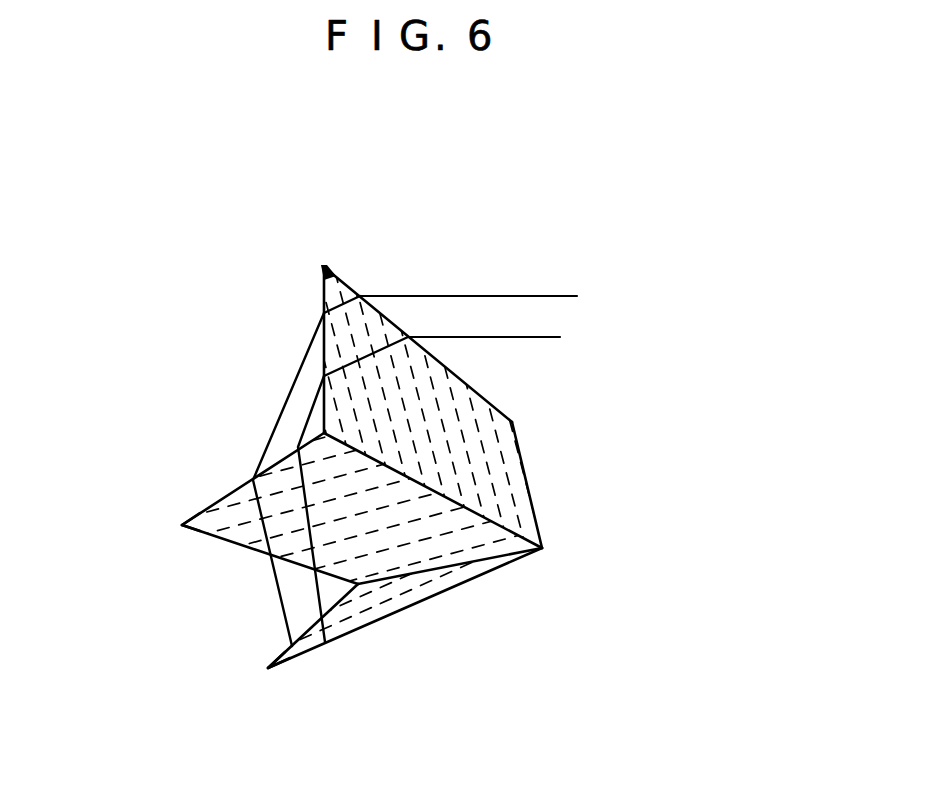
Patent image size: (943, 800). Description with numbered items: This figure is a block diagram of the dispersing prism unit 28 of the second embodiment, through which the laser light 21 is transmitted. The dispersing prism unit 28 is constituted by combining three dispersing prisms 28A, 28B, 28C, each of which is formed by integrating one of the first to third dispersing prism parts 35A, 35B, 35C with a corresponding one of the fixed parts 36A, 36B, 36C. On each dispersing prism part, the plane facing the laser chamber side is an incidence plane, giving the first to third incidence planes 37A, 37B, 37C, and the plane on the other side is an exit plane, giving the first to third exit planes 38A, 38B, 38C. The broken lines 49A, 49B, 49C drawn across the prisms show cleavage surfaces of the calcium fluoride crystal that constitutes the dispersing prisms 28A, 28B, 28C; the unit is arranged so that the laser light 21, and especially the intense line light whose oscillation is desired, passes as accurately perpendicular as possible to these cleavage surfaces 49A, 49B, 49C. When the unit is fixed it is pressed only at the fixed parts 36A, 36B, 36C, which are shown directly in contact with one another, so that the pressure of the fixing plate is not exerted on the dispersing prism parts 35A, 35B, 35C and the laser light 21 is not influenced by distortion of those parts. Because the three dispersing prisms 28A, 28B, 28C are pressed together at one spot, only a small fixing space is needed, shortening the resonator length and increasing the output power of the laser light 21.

The laser light 21 is at (522, 296).
The dispersing prism unit 28 is at (793, 470).
The first dispersing prism 28A is at (517, 503).
The second dispersing prism 28B is at (473, 520).
The third dispersing prism 28C is at (462, 574).
The first dispersing prism part 35A is at (338, 271).
The second dispersing prism part 35B is at (197, 516).
The third dispersing prism part 35C is at (288, 650).
The first fixed part 36A is at (498, 474).
The second fixed part 36B is at (544, 549).
The third fixed part 36C is at (440, 590).
The first incidence plane 37A is at (343, 281).
The second incidence plane 37B is at (232, 491).
The third incidence plane 37C is at (290, 660).
The first exit plane 38A is at (323, 340).
The second exit plane 38B is at (212, 537).
The third exit plane 38C is at (356, 631).
The cleavage surface 49A is at (452, 410).
The cleavage surface 49B is at (520, 565).
The cleavage surface 49C is at (345, 588).